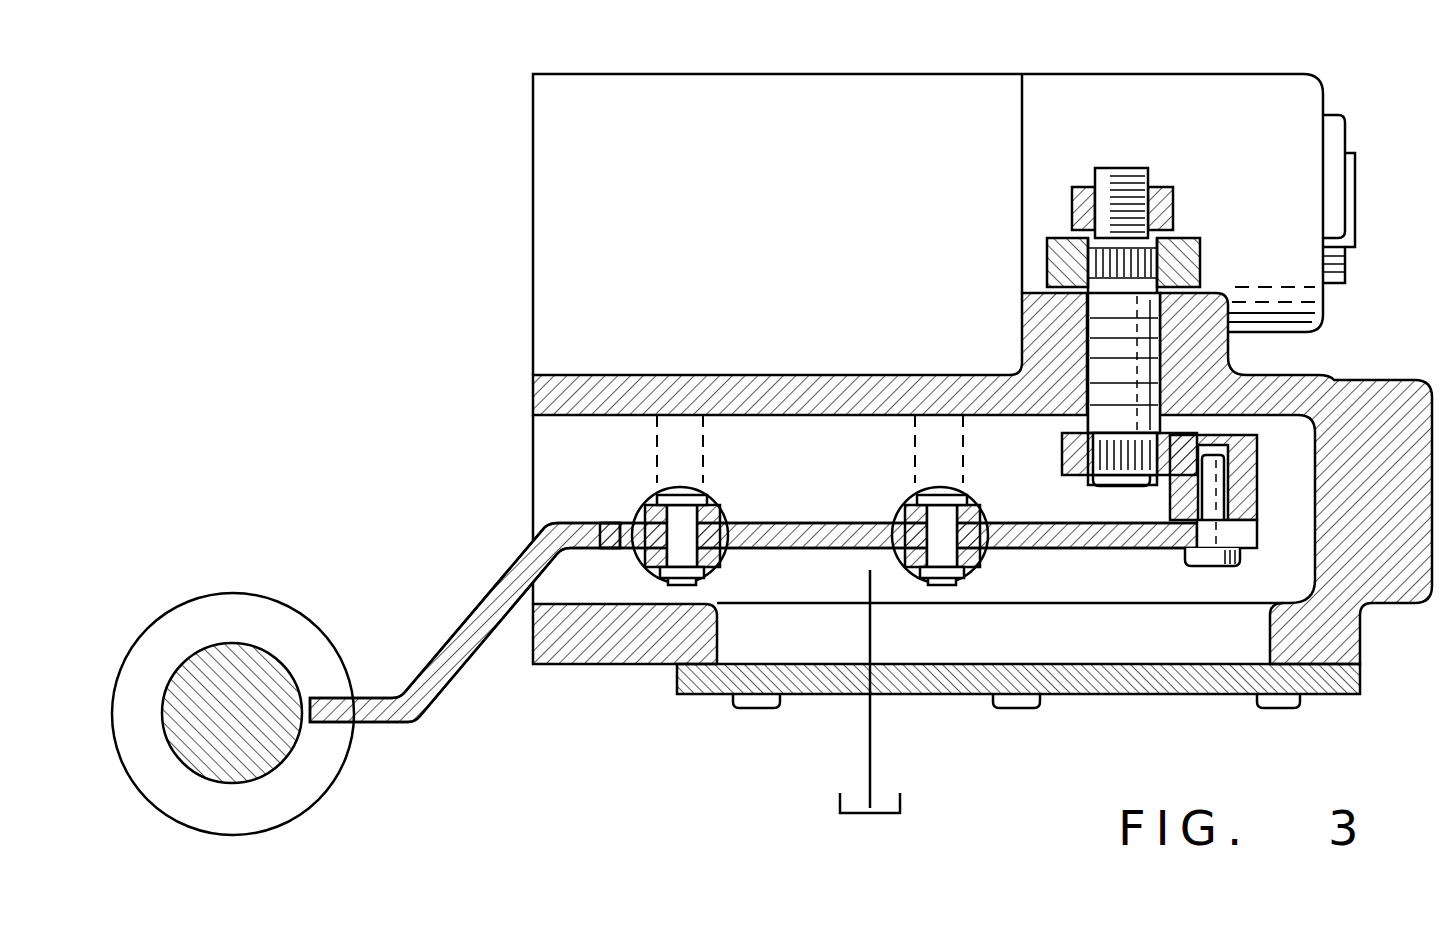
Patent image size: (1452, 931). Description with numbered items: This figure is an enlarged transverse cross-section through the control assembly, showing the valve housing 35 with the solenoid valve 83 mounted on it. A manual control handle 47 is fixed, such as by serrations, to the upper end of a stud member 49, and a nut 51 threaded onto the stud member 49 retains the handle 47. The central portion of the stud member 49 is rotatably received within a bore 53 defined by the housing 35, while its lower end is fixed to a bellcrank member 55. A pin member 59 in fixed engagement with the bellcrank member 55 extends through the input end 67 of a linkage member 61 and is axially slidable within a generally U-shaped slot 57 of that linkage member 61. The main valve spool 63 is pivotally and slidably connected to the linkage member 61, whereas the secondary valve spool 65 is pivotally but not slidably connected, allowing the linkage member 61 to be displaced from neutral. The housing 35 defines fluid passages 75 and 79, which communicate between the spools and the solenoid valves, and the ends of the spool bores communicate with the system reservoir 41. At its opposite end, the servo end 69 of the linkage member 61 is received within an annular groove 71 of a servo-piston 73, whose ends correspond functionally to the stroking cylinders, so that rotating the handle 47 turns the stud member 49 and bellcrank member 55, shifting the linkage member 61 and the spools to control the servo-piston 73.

The valve housing 35 is at (695, 388).
The solenoid valve 83 is at (1183, 66).
The stud member 49 is at (1135, 168).
The nut 51 is at (1175, 210).
The manual control handle 47 is at (1175, 265).
The bore 53 is at (1095, 348).
The bellcrank member 55 is at (1256, 457).
The pin member 59 is at (1222, 497).
The U-shaped slot 57 is at (1248, 536).
The input end 67 is at (1184, 552).
The linkage member 61 is at (848, 532).
The main valve spool 63 is at (978, 512).
The secondary valve spool 65 is at (640, 512).
The fluid passage 79 is at (678, 447).
The fluid passage 75 is at (930, 436).
The servo end 69 is at (412, 712).
The annular groove 71 is at (218, 627).
The servo-piston 73 is at (275, 690).
The system reservoir 41 is at (838, 805).